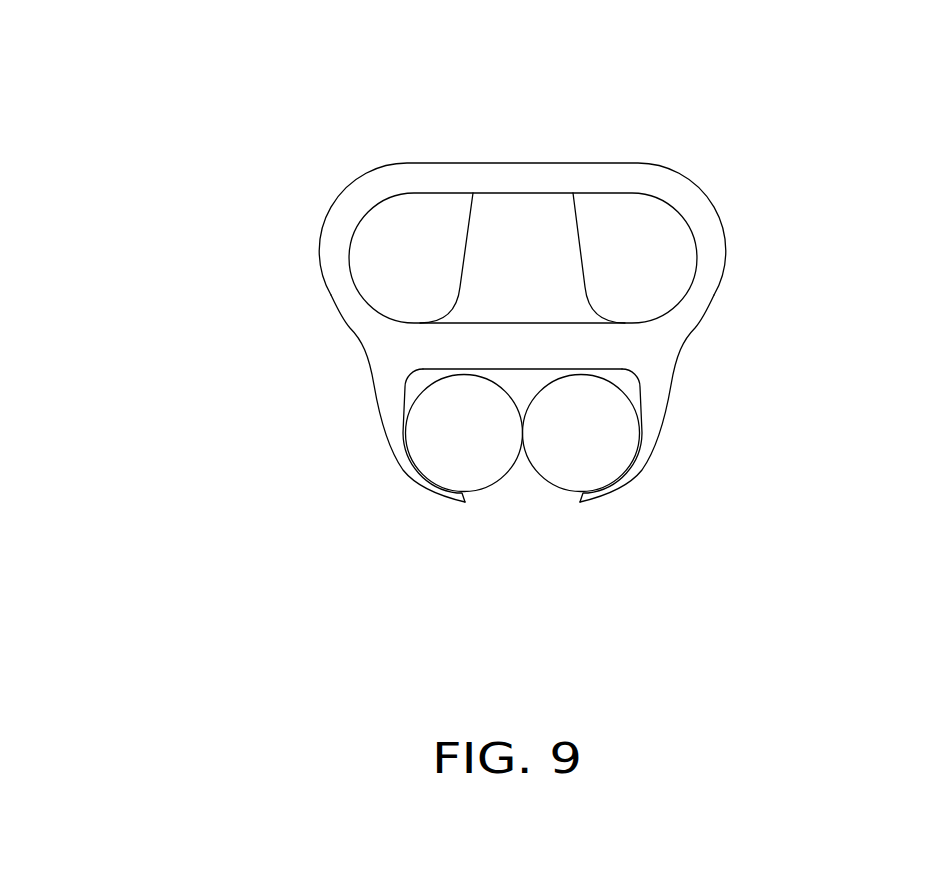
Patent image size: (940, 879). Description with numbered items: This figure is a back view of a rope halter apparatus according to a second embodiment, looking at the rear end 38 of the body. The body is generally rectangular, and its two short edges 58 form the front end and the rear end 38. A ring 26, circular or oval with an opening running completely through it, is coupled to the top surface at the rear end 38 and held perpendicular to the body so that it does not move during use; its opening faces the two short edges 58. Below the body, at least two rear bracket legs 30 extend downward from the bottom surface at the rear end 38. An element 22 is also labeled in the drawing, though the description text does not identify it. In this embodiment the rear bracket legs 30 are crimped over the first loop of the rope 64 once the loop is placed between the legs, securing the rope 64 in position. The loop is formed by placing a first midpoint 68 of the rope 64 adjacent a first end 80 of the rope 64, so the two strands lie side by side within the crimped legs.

The upper passage 22 is at (500, 205).
The ring 26 is at (597, 175).
The rear end 38 is at (388, 352).
The short edges 58 is at (642, 345).
The rear bracket legs 30 is at (383, 425).
The first midpoint 68 is at (427, 407).
The rope 64 is at (463, 455).
The first end 80 is at (595, 465).